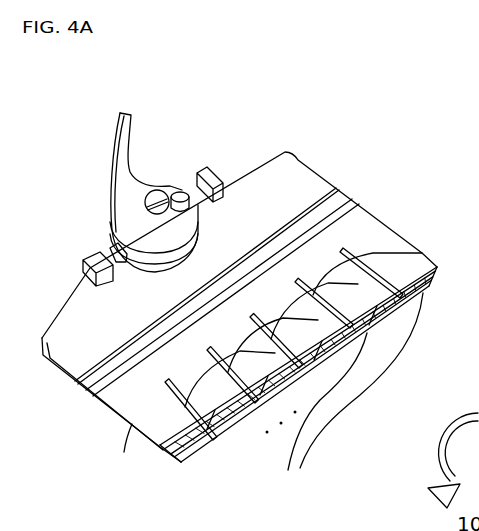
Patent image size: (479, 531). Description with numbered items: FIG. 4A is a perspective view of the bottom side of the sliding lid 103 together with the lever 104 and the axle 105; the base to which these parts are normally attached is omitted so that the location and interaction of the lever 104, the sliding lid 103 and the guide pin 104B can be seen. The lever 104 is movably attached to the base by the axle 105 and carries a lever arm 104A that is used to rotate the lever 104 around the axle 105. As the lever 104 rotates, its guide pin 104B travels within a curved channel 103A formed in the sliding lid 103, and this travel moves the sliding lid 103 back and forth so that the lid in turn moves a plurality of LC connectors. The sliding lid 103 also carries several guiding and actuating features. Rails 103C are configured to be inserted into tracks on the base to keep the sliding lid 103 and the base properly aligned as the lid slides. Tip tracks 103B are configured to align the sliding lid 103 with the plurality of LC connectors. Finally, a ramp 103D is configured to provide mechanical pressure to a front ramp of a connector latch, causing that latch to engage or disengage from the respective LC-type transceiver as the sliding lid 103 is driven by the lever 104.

The sliding lid 103 is at (298, 178).
The curved channel 103A is at (110, 253).
The tip tracks 103B is at (165, 385).
The rails 103C is at (85, 260).
The ramp 103D is at (218, 445).
The lever 104 is at (118, 191).
The lever arm 104A is at (118, 140).
The guide pin 104B is at (183, 191).
The axle 105 is at (152, 192).